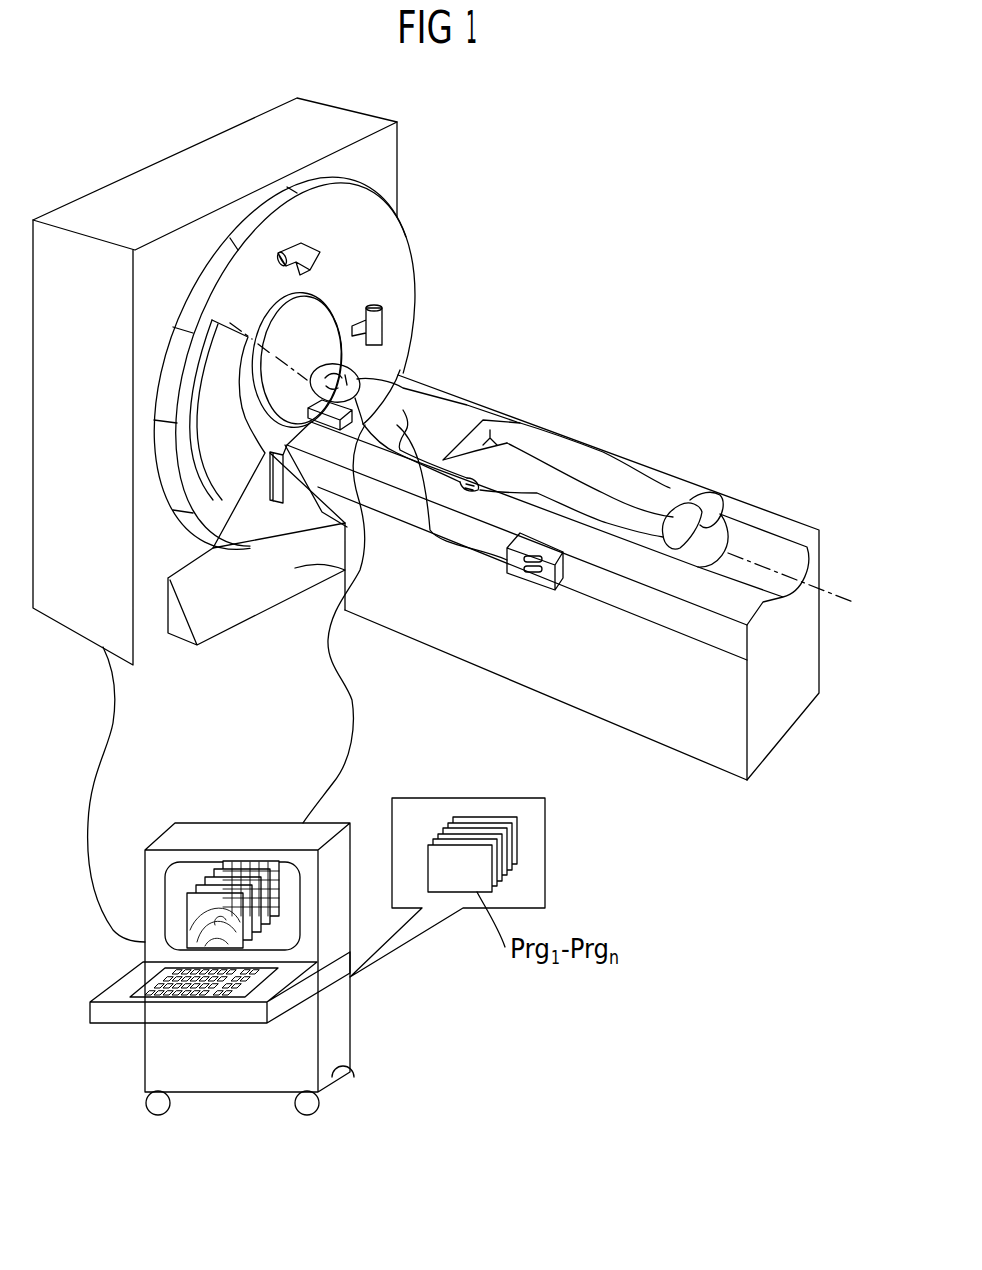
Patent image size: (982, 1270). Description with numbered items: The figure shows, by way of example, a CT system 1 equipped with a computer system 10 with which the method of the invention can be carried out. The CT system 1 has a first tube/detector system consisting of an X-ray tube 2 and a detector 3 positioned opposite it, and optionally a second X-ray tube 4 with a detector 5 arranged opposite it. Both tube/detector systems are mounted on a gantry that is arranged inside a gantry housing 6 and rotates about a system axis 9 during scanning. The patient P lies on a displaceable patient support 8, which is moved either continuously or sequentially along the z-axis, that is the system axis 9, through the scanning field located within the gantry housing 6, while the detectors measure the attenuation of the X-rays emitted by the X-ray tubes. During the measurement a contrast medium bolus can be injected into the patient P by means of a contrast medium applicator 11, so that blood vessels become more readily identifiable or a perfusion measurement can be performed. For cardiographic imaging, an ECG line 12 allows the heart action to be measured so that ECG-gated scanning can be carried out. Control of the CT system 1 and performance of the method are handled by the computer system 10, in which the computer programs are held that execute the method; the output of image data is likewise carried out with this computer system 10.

The CT system 1 is at (592, 300).
The first X-ray tube 2 is at (320, 258).
The first detector 3 is at (287, 488).
The second X-ray tube 4 is at (378, 322).
The second detector 5 is at (225, 477).
The gantry housing 6 is at (63, 597).
The patient support 8 is at (700, 743).
The system axis 9 is at (843, 595).
The computer system 10 is at (340, 1027).
The contrast medium applicator 11 is at (541, 592).
The ECG line 12 is at (348, 710).
The patient P is at (440, 404).